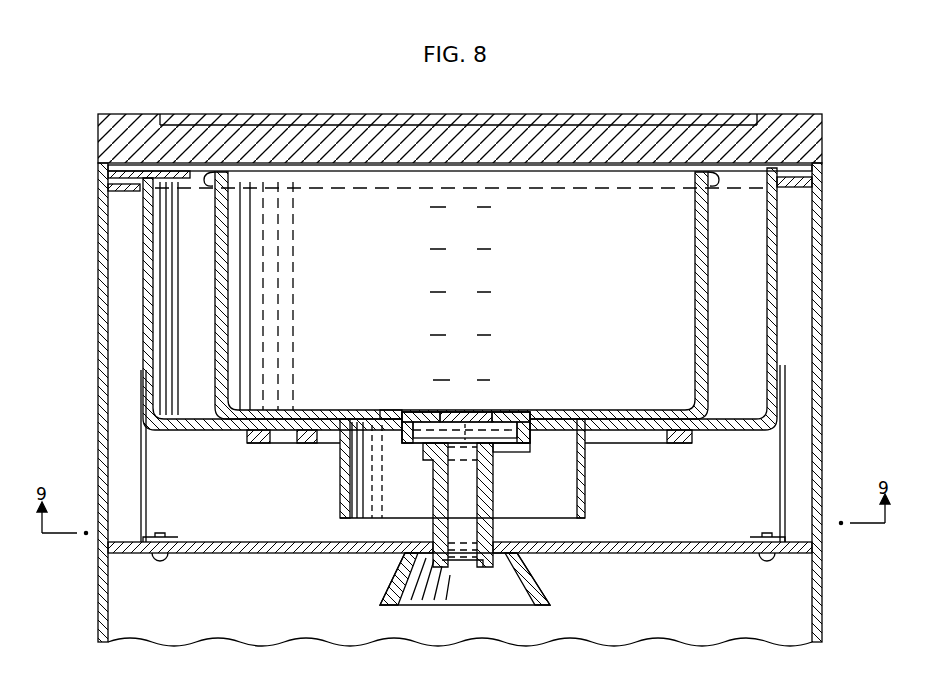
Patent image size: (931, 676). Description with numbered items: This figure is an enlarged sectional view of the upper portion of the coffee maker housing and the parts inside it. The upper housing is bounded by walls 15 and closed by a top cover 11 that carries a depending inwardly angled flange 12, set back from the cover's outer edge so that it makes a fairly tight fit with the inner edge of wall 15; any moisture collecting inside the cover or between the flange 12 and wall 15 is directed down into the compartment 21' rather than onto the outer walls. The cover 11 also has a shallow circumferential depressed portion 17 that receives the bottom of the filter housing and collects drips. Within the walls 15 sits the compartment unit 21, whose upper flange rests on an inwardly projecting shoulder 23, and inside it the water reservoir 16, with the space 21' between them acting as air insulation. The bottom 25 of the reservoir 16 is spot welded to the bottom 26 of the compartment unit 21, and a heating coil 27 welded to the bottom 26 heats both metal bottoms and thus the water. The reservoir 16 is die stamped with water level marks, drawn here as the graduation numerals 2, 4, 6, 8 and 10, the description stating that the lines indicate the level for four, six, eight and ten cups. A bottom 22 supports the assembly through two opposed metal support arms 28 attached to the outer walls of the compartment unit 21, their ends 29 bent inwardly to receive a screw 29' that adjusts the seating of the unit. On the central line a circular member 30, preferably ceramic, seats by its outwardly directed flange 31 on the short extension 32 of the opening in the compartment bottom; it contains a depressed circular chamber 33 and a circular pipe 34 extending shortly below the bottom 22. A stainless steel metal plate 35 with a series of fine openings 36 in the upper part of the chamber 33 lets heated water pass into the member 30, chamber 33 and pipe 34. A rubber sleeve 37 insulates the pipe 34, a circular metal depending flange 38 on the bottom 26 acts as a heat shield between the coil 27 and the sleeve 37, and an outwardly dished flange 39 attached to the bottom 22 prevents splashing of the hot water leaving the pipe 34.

The top cover 11 is at (124, 114).
The depressed portion 17 is at (313, 125).
The inwardly angled flange 12 is at (108, 167).
The wall 15 is at (98, 246).
The inwardly projecting shoulder 23 is at (122, 191).
The compartment unit 21 is at (412, 299).
The compartment 21' is at (178, 298).
The bottom of the compartment unit 26 is at (176, 413).
The bottom of the water reservoir 25 is at (278, 413).
The water reservoir 16 is at (226, 257).
The heating coil 27 is at (261, 437).
The depending flange 38 is at (340, 494).
The outwardly directed flange 31 is at (386, 415).
The metal plate 35 is at (483, 413).
The fine openings 36 is at (448, 413).
The short extension 32 is at (400, 437).
The depressed circular chamber 33 is at (525, 440).
The circular member 30 is at (515, 452).
The rubber sleeve 37 is at (433, 485).
The circular pipe 34 is at (472, 503).
The bottom 22 is at (295, 553).
The outwardly dished flange 39 is at (393, 578).
The metal support arms 28 is at (148, 481).
The bent ends of the support arms 29 is at (464, 522).
The screw 29' is at (456, 577).
The ten-cup water level mark 10 is at (460, 207).
The eight-cup water level mark 8 is at (460, 249).
The six-cup water level mark 6 is at (460, 292).
The four-cup water level mark 4 is at (460, 335).
The graduation mark 2 is at (461, 380).